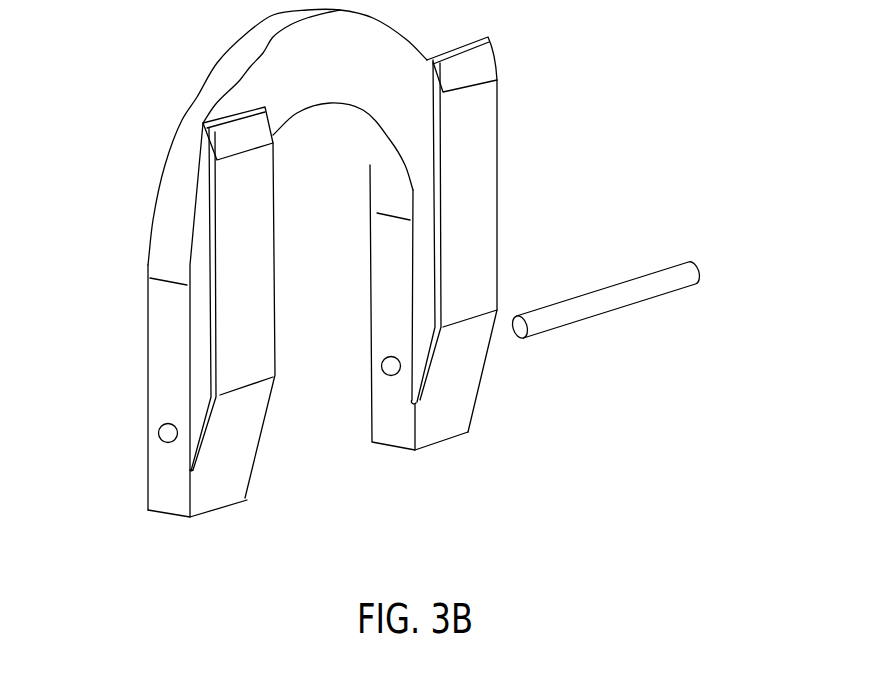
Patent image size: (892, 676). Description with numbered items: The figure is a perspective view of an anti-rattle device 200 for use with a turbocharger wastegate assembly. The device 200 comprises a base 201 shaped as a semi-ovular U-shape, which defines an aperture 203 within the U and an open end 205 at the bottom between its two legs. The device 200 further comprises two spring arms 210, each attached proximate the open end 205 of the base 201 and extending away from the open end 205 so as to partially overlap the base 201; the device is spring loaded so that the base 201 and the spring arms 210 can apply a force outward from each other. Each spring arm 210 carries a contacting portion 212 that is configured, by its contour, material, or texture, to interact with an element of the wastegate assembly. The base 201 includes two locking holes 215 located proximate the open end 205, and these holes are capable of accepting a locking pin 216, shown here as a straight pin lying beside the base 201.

The anti-rattle device 200 is at (667, 70).
The base 201 is at (160, 223).
The aperture 203 is at (339, 262).
The open end 205 is at (315, 457).
The spring arm 210 is at (227, 152).
The contacting portion 212 is at (481, 214).
The locking hole 215 is at (158, 433).
The locking pin 216 is at (607, 307).